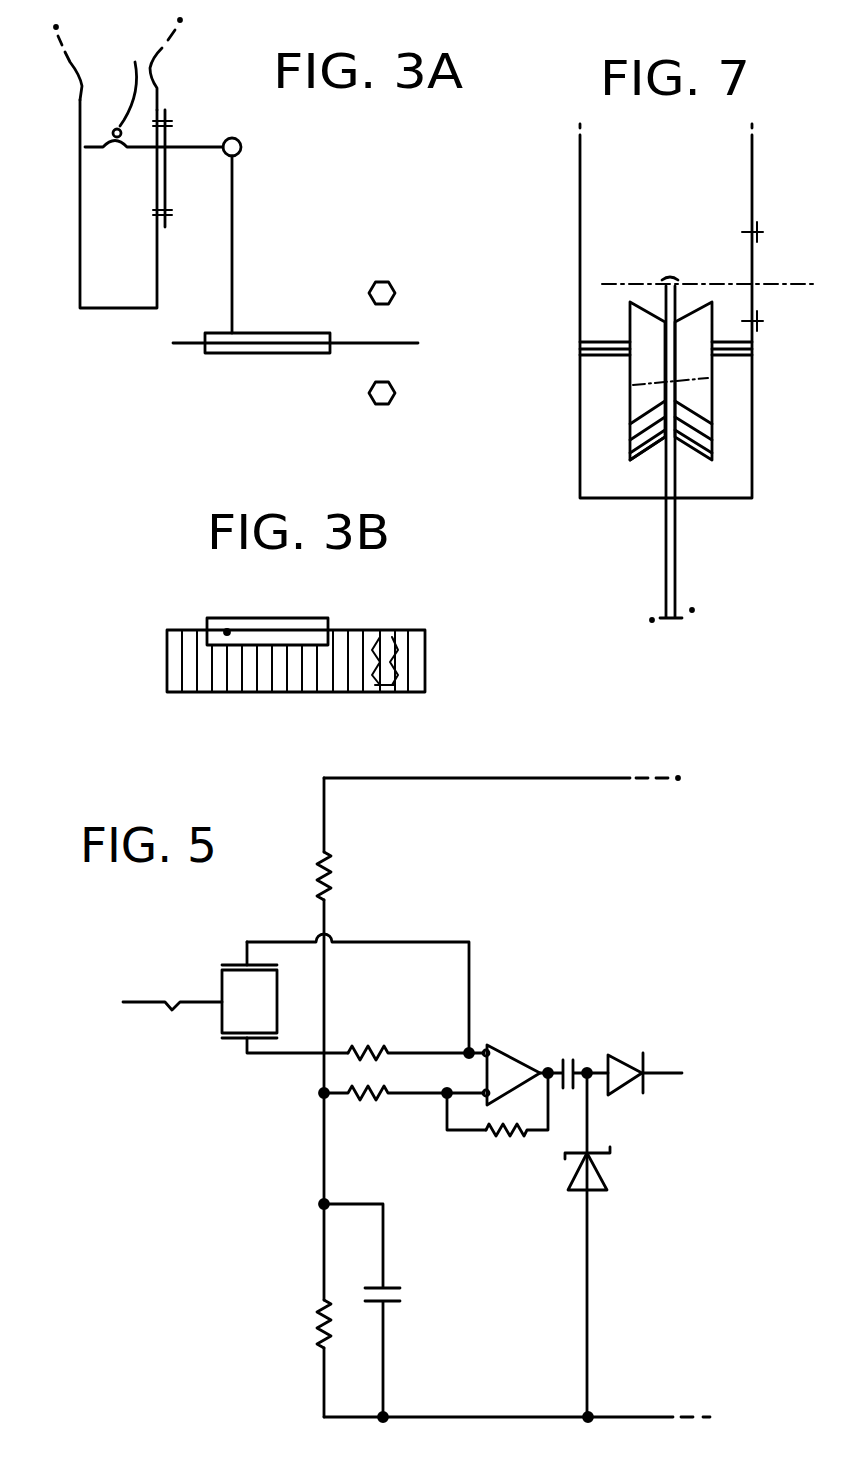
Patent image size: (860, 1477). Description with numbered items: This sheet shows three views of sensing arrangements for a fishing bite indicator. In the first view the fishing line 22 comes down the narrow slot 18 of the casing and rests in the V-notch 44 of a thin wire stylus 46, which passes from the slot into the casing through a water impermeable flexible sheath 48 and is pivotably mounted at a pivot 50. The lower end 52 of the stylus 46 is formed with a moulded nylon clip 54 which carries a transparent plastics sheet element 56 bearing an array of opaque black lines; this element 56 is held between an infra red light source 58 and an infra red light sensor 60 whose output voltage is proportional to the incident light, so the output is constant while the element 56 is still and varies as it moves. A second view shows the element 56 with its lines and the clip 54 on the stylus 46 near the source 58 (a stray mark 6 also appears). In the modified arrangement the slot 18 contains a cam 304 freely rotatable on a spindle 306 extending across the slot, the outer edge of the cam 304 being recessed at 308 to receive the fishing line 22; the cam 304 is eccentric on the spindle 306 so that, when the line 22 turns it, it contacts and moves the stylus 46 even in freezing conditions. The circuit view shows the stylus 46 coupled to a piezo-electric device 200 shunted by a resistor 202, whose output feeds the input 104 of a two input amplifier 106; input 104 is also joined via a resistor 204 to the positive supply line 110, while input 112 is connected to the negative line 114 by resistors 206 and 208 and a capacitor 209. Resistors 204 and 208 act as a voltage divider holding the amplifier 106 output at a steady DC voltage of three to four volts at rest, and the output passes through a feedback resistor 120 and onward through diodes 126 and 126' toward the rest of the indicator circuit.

In FIG. 3A, the narrow slot 18 is at (97, 258).
In FIG. 7, the narrow slot 18 is at (737, 472).
In FIG. 3A, the fishing line 22 is at (126, 78).
In FIG. 7, the fishing line 22 is at (675, 548).
In FIG. 3A, the V-notch 44 is at (127, 147).
In FIG. 3A, the wire stylus 46 is at (188, 143).
In FIG. 3B, the wire stylus 46 is at (227, 632).
In FIG. 5, the wire stylus 46 is at (135, 1000).
In FIG. 3A, the flexible sheath 48 is at (165, 182).
In FIG. 3A, the pivot 50 is at (243, 142).
In FIG. 3A, the lower end of stylus 52 is at (310, 243).
In FIG. 3A, the nylon clip 54 is at (257, 355).
In FIG. 3B, the nylon clip 54 is at (312, 625).
In FIG. 3A, the transparent plastics sheet element 56 is at (407, 340).
In FIG. 3B, the transparent plastics sheet element 56 is at (237, 692).
In FIG. 3A, the infra red light source 58 is at (367, 393).
In FIG. 3B, the infra red light source 58 is at (403, 630).
In FIG. 3A, the infra red light sensor 60 is at (393, 292).
In FIG. 3A, the reference 6 is at (433, 379).
In FIG. 7, the cam 304 is at (713, 393).
In FIG. 7, the spindle 306 is at (590, 342).
In FIG. 7, the recess 308 is at (658, 448).
In FIG. 5, the positive supply line 110 is at (515, 777).
In FIG. 5, the negative line 114 is at (452, 1417).
In FIG. 5, the amplifier input 104 is at (482, 1045).
In FIG. 5, the two input amplifier 106 is at (507, 1068).
In FIG. 5, the amplifier input 112 is at (487, 1095).
In FIG. 5, the feedback resistor 120 is at (502, 1138).
In FIG. 5, the zener diode 126 is at (639, 1245).
In FIG. 5, the diode 126' is at (671, 1047).
In FIG. 5, the piezo-electric device 200 is at (223, 1023).
In FIG. 5, the resistor 202 is at (373, 1047).
In FIG. 5, the resistor 204 is at (333, 863).
In FIG. 5, the resistor 206 is at (353, 1100).
In FIG. 5, the resistor 208 is at (317, 1325).
In FIG. 5, the capacitor 209 is at (398, 1287).